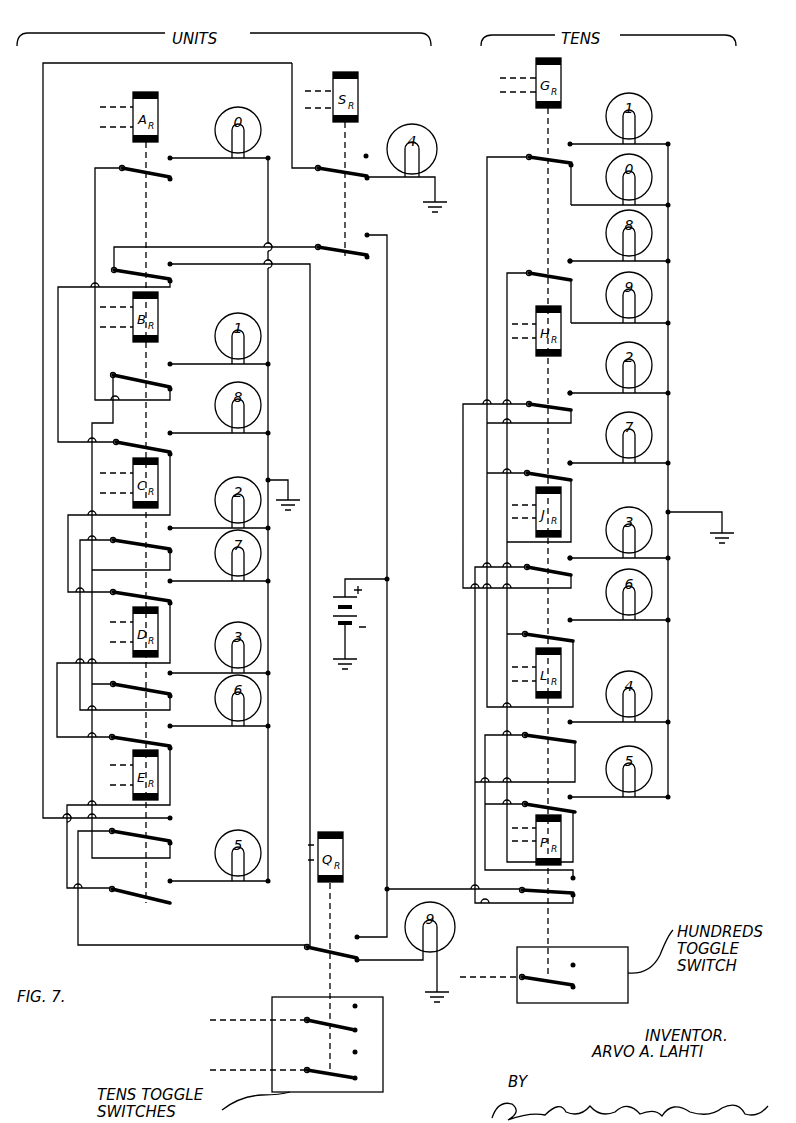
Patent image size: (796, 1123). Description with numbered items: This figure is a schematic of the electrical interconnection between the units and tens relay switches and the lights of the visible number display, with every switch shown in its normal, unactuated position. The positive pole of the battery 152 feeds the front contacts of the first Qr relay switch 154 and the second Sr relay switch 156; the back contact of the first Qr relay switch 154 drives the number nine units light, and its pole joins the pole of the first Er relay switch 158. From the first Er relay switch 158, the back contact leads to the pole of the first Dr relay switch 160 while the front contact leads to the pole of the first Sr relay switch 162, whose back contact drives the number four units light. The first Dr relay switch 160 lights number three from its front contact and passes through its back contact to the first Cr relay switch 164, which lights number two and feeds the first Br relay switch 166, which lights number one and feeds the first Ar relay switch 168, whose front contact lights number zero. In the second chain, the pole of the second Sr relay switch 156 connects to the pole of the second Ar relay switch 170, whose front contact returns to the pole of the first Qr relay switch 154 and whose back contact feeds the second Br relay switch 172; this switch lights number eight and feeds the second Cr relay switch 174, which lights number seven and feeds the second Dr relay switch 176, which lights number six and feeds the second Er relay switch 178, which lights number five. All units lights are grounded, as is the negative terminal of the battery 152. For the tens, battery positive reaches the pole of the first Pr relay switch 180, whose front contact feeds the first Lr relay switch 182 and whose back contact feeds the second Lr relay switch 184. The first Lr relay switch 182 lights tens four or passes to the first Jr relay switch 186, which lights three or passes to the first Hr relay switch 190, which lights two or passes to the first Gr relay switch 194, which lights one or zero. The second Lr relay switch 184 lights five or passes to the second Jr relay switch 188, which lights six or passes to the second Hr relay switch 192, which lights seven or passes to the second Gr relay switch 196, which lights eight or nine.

The battery 152 is at (330, 592).
The first Qr relay switch 154 is at (364, 915).
The second Sr relay switch 156 is at (356, 258).
The first Er relay switch 158 is at (168, 838).
The first Dr relay switch 160 is at (163, 684).
The first Sr relay switch 162 is at (332, 178).
The first Cr relay switch 164 is at (165, 540).
The first Br relay switch 166 is at (163, 377).
The first Ar relay switch 168 is at (165, 165).
The second Ar relay switch 170 is at (178, 272).
The second Br relay switch 172 is at (173, 442).
The second Cr relay switch 174 is at (177, 601).
The second Dr relay switch 176 is at (163, 744).
The second Er relay switch 178 is at (140, 908).
The first Pr relay switch 180 is at (582, 893).
The first Lr relay switch 182 is at (560, 745).
The second Lr relay switch 184 is at (560, 815).
The first Jr relay switch 186 is at (556, 578).
The second Jr relay switch 188 is at (563, 643).
The first Hr relay switch 190 is at (556, 400).
The second Hr relay switch 192 is at (557, 470).
The first Gr relay switch 194 is at (556, 166).
The second Gr relay switch 196 is at (545, 267).